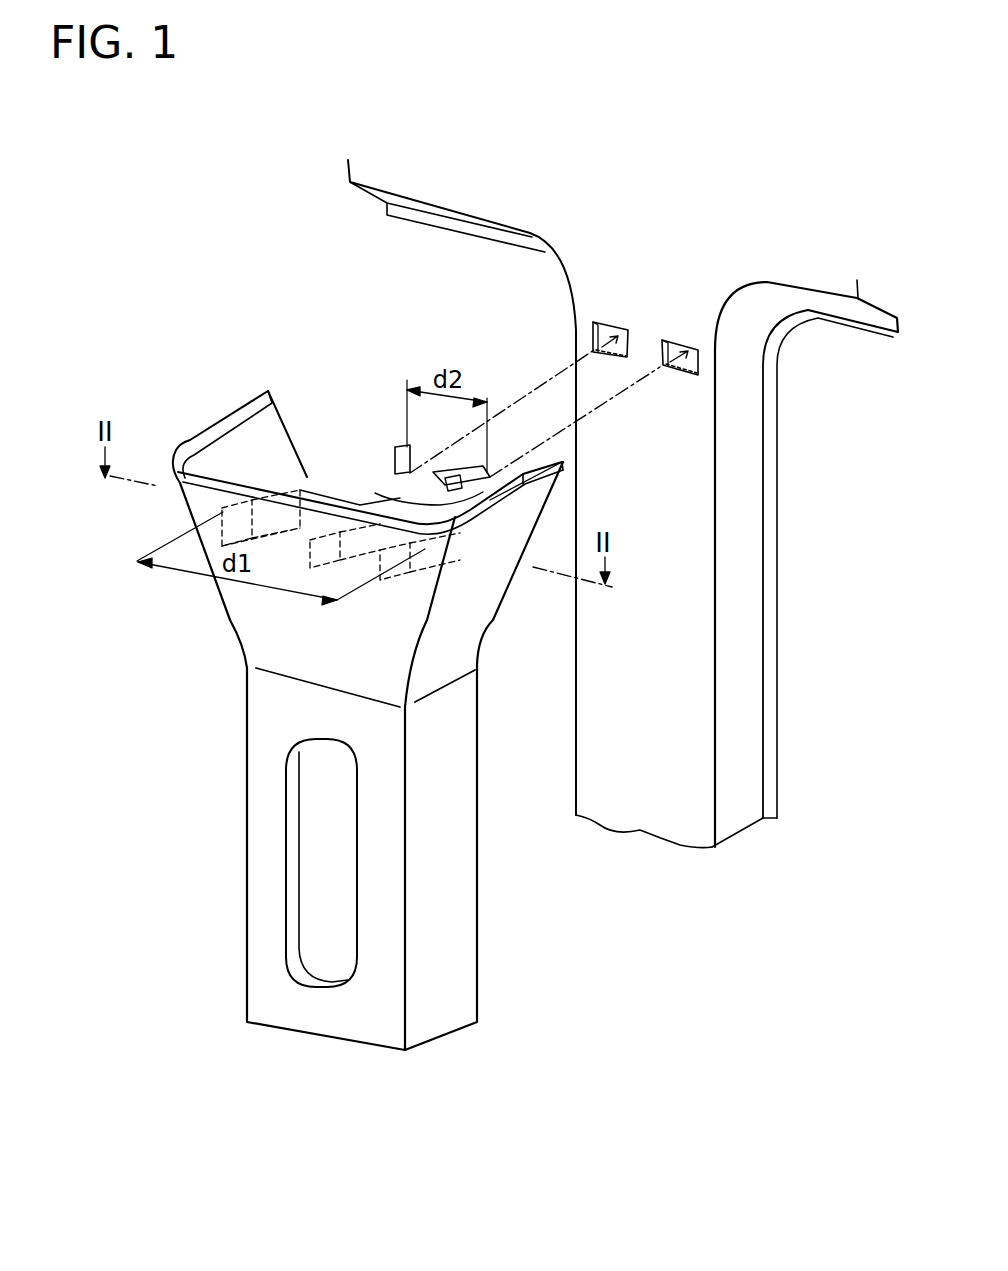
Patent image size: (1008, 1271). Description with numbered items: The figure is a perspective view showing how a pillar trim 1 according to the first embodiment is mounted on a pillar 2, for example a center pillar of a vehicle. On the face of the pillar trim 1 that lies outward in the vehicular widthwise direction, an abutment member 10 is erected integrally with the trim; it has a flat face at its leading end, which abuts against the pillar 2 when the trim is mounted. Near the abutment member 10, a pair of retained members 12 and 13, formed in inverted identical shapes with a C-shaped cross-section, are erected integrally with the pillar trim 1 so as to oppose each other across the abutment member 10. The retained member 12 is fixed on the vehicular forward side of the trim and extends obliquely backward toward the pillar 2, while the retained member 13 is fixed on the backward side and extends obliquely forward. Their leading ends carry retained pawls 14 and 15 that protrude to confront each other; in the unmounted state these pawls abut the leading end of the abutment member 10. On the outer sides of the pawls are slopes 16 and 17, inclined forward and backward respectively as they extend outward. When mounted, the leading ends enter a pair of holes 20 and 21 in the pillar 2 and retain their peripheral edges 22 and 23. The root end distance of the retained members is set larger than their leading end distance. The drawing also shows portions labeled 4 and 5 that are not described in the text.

The pillar trim 1 is at (270, 767).
The pillar 2 is at (773, 392).
The flange plate 4 is at (243, 405).
The support arm 5 is at (537, 503).
The abutment member 10 is at (377, 493).
The retained member 12 is at (367, 463).
The retained member 13 is at (563, 471).
The retained pawl 14 is at (400, 470).
The retained pawl 15 is at (562, 462).
The slope 16 is at (410, 473).
The slope 17 is at (463, 473).
The hole 20 is at (602, 322).
The hole 21 is at (693, 348).
The peripheral edge 22 is at (636, 332).
The peripheral edge 23 is at (664, 346).